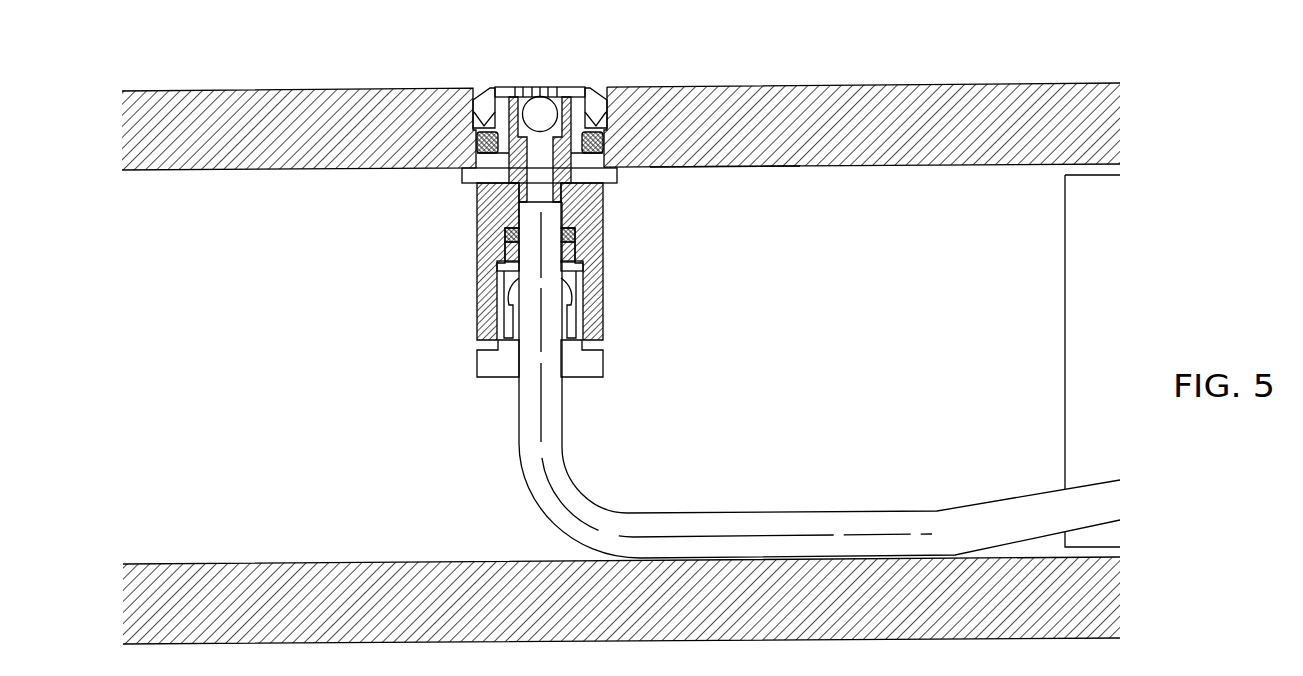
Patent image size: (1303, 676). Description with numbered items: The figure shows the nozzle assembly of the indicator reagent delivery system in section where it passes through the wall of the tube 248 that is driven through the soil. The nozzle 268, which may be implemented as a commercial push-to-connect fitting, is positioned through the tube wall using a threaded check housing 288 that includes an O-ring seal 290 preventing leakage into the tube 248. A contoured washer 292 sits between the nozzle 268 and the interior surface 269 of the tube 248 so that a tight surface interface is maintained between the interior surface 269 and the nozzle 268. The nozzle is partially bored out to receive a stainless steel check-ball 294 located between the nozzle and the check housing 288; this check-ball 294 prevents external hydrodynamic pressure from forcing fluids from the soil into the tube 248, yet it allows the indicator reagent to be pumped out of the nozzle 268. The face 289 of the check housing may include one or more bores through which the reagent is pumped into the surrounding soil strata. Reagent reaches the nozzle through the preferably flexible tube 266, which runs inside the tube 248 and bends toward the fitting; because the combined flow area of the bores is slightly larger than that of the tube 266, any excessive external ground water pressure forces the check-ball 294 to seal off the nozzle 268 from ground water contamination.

The tube 248 is at (848, 95).
The flexible tube 266 is at (862, 522).
The nozzle 268 is at (573, 95).
The interior surface 269 is at (718, 168).
The check housing 288 is at (502, 93).
The face 289 is at (535, 82).
The O-ring seal 290 is at (603, 142).
The contoured washer 292 is at (462, 183).
The check-ball 294 is at (545, 106).